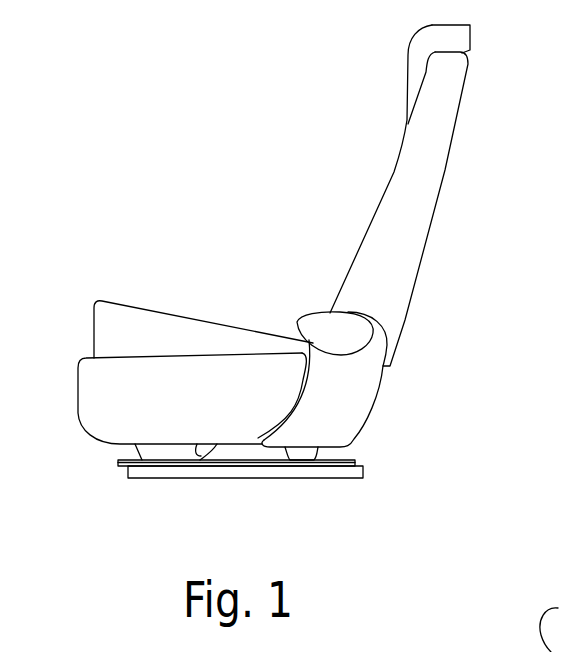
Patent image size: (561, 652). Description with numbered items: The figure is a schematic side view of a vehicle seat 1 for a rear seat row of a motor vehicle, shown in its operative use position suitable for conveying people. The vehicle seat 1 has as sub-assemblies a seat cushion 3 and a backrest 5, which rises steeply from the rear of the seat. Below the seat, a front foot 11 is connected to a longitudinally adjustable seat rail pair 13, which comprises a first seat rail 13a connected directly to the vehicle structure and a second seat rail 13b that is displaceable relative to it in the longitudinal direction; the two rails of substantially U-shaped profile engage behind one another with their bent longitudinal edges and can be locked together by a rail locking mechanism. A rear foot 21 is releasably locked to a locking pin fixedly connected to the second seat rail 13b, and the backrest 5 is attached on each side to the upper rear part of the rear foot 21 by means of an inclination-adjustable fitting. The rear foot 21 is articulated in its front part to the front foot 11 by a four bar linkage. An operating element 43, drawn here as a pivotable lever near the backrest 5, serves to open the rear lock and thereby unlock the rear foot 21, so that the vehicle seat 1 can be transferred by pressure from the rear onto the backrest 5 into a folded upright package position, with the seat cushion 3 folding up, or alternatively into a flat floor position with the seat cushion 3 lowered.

The vehicle seat 1 is at (260, 298).
The seat cushion 3 is at (133, 302).
The backrest 5 is at (407, 209).
The operating element 43 is at (320, 332).
The front foot 11 is at (173, 447).
The rear foot 21 is at (320, 453).
The seat rail pair 13 is at (260, 515).
The first seat rail 13a is at (366, 470).
The second seat rail 13b is at (118, 464).